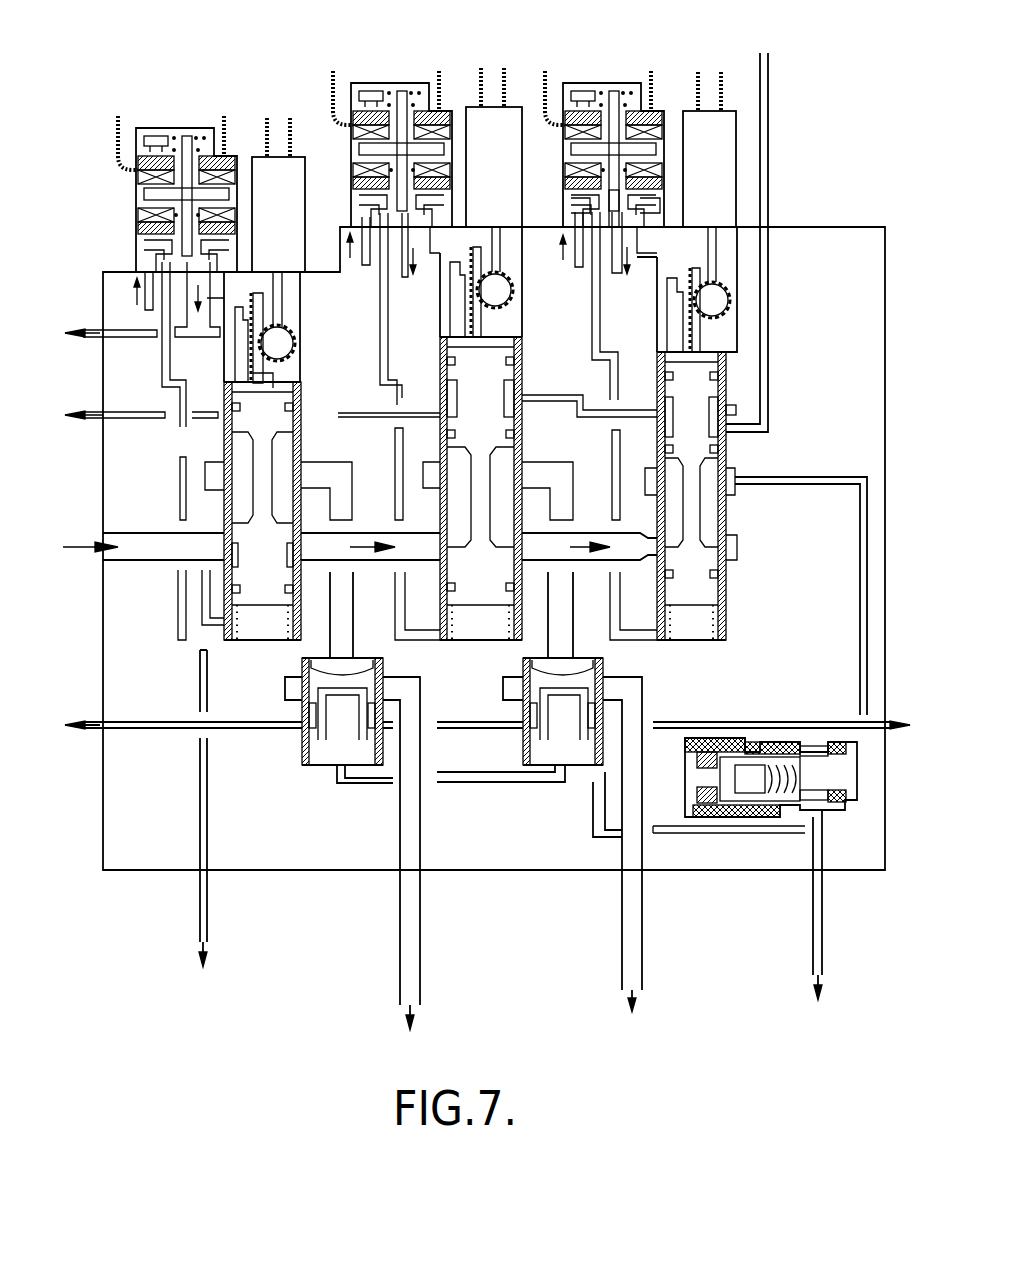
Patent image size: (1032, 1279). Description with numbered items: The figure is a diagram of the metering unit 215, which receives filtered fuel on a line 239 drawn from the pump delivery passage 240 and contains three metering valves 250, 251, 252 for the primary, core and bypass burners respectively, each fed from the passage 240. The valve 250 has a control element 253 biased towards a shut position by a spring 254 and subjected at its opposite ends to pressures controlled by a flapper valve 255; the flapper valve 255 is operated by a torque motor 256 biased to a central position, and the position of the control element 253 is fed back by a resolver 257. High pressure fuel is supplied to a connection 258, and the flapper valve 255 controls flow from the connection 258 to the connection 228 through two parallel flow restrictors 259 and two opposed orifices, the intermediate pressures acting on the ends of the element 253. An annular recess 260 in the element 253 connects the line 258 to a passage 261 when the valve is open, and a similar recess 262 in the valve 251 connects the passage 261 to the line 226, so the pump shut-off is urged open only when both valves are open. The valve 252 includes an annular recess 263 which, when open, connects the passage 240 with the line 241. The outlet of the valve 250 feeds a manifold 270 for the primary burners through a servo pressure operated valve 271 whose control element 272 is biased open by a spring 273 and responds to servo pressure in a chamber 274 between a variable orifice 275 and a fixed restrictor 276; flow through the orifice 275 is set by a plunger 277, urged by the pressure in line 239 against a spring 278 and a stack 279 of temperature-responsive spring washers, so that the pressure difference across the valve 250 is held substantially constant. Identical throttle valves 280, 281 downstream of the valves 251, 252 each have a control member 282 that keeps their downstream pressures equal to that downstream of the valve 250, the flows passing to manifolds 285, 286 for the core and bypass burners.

The metering unit 215 is at (303, 860).
The line 226 is at (88, 410).
The connection 228 is at (105, 339).
The line 239 is at (128, 730).
The pump delivery passage 240 is at (91, 540).
The line 241 is at (198, 900).
The metering valve 250 is at (790, 339).
The metering valve 251 is at (455, 433).
The metering valve 252 is at (278, 456).
The control element 253 is at (730, 433).
The spring 254 is at (727, 613).
The flapper valve 255 is at (613, 203).
The torque motor 256 is at (641, 112).
The resolver 257 is at (723, 127).
The connection 258 is at (577, 250).
The flow restrictors 259 is at (578, 207).
The annular recess 260 is at (722, 409).
The passage 261 is at (560, 395).
The recess 262 is at (453, 398).
The annular recess 263 is at (237, 547).
The manifold 270 is at (822, 929).
The servo pressure operated valve 271 is at (759, 784).
The control element 272 is at (700, 792).
The spring 273 is at (760, 738).
The chamber 274 is at (692, 746).
The variable orifice 275 is at (728, 745).
The fixed restrictor 276 is at (688, 820).
The plunger 277 is at (737, 808).
The spring 278 is at (756, 815).
The stack of temperature-responsive spring washers 279 is at (808, 798).
The throttle valve 280 is at (556, 786).
The throttle valve 281 is at (436, 701).
The control member 282 is at (453, 701).
The manifold 285 is at (622, 915).
The manifold 286 is at (420, 927).